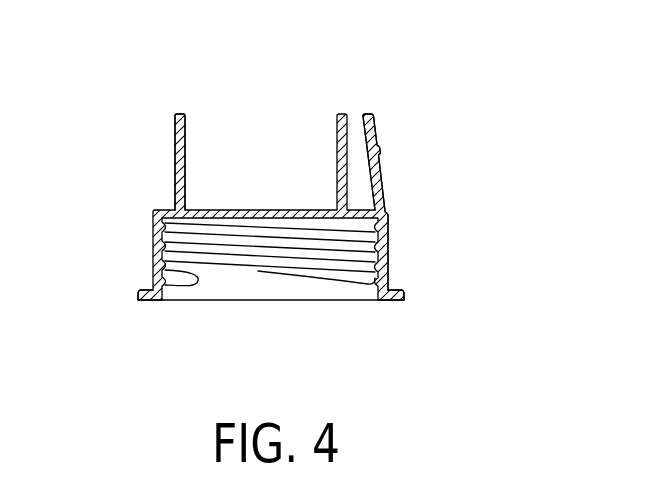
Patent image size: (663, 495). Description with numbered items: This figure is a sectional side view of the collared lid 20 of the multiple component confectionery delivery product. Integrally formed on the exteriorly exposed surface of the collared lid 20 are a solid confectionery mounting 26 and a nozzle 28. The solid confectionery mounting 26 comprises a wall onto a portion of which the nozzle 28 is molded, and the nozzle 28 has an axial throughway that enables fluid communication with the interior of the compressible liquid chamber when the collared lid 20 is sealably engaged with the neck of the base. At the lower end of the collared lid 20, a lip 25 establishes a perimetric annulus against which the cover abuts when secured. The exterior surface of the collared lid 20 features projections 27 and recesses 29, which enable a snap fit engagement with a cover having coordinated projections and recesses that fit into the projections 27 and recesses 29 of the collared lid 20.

The collared lid 20 is at (160, 253).
The lip 25 is at (404, 297).
The solid confectionery mounting 26 is at (176, 150).
The projections 27 is at (389, 263).
The nozzle 28 is at (377, 163).
The recesses 29 is at (389, 252).